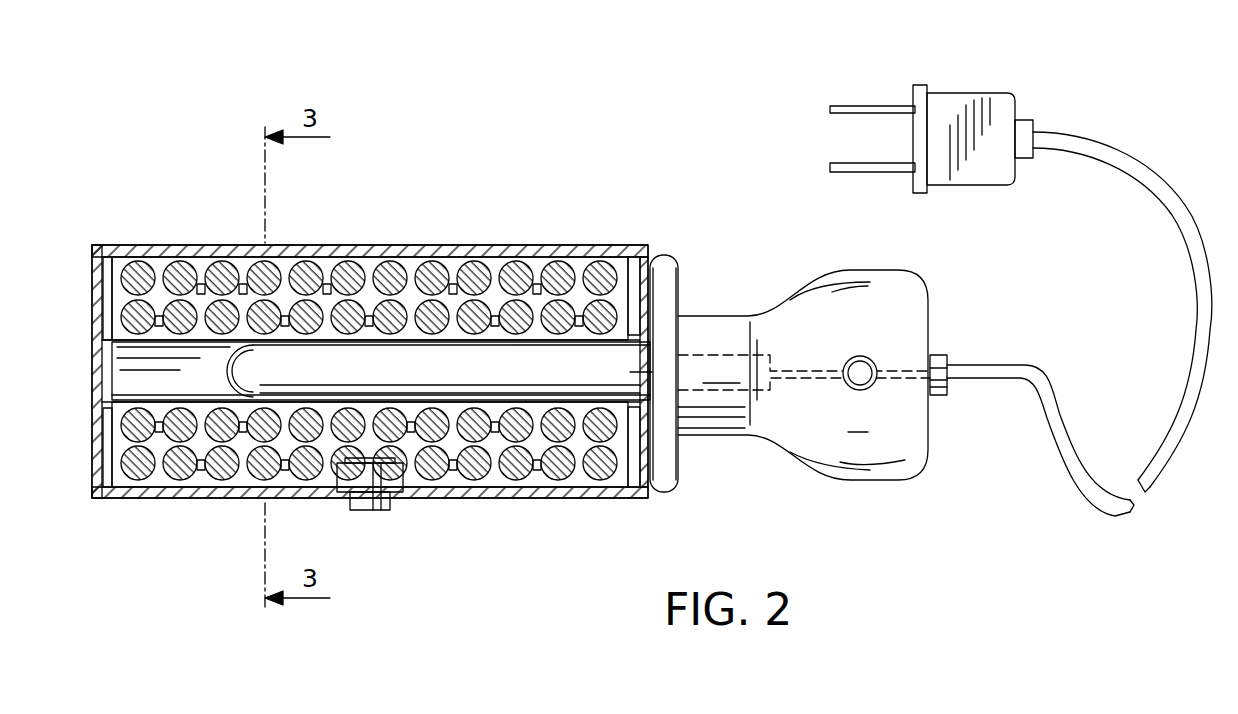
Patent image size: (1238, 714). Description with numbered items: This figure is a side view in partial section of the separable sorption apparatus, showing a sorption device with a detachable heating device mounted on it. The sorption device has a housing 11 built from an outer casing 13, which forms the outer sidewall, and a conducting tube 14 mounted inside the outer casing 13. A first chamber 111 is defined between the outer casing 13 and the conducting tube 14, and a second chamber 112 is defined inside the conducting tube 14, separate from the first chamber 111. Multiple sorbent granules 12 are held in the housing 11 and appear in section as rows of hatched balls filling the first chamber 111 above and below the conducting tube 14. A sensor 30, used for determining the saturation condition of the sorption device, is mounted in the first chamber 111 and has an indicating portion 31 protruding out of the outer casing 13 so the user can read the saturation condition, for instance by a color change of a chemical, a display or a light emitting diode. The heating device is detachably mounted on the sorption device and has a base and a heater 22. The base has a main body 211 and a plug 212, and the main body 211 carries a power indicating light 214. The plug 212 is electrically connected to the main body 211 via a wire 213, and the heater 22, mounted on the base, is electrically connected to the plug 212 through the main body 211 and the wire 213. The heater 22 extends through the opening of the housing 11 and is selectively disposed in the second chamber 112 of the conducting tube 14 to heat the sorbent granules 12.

The housing 11 is at (122, 237).
The first chamber 111 is at (455, 268).
The second chamber 112 is at (138, 377).
The sorbent granules 12 is at (560, 277).
The outer casing 13 is at (375, 252).
The conducting tube 14 is at (158, 403).
The heater 22 is at (555, 370).
The sensor 30 is at (387, 477).
The indicating portion 31 is at (377, 502).
The main body 211 is at (872, 452).
The plug 212 is at (963, 107).
The wire 213 is at (1205, 305).
The power indicating light 214 is at (862, 356).